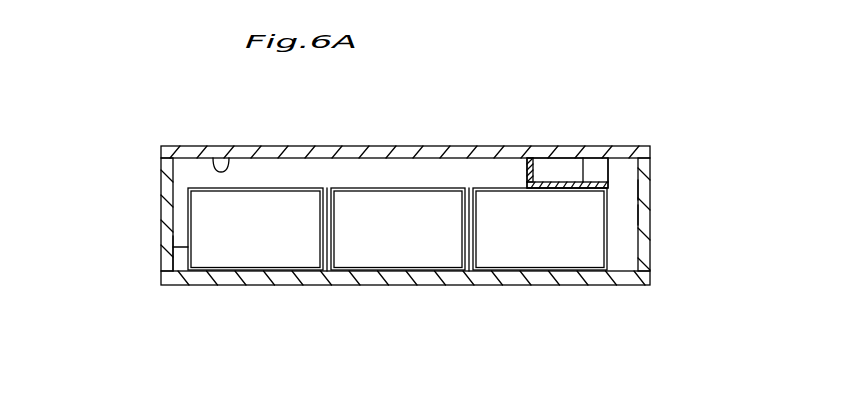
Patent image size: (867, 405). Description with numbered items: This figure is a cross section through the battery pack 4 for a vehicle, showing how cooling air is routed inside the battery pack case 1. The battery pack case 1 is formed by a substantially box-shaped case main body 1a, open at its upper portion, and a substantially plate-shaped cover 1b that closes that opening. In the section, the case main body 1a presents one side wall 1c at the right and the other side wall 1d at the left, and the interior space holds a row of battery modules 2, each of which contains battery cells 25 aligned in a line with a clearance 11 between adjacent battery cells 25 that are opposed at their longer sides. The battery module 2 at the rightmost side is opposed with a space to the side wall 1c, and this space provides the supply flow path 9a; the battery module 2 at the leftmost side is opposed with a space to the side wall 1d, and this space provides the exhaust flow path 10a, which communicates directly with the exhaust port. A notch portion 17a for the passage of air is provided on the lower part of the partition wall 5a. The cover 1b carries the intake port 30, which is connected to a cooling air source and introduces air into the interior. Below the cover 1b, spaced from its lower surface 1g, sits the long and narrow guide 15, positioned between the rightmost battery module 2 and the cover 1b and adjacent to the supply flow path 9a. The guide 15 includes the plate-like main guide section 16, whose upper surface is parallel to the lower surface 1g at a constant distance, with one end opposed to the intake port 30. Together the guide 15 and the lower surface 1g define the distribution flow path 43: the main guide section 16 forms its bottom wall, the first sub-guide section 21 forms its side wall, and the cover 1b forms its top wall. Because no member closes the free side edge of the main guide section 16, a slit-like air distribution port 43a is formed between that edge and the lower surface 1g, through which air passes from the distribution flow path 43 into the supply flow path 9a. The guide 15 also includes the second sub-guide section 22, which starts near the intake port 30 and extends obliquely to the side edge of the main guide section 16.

The battery pack case 1 is at (93, 150).
The case main body 1a is at (162, 190).
The cover 1b is at (160, 153).
The side wall 1c is at (647, 248).
The side wall 1d is at (164, 228).
The lower surface 1g is at (213, 157).
The battery module 2 is at (253, 257).
The battery cell 25 is at (397, 260).
The battery pack 4 is at (707, 108).
The partition wall 5a is at (632, 190).
The supply flow path 9a is at (632, 213).
The exhaust flow path 10a is at (177, 239).
The clearance 11 is at (327, 283).
The guide 15 is at (524, 176).
The main guide section 16 is at (550, 175).
The notch portion 17a is at (184, 286).
The first sub-guide section 21 is at (533, 168).
The second sub-guide section 22 is at (607, 170).
The intake port 30 is at (568, 152).
The distribution flow path 43 is at (560, 181).
The air distribution port 43a is at (607, 178).